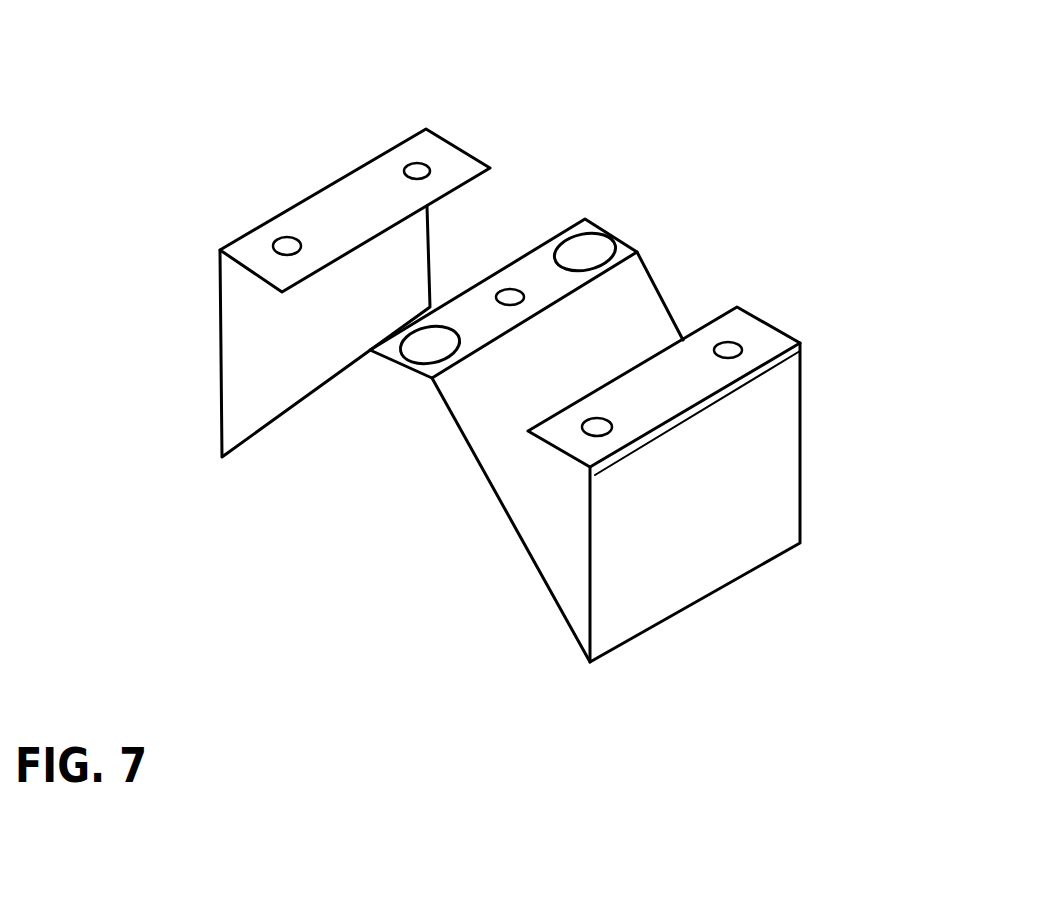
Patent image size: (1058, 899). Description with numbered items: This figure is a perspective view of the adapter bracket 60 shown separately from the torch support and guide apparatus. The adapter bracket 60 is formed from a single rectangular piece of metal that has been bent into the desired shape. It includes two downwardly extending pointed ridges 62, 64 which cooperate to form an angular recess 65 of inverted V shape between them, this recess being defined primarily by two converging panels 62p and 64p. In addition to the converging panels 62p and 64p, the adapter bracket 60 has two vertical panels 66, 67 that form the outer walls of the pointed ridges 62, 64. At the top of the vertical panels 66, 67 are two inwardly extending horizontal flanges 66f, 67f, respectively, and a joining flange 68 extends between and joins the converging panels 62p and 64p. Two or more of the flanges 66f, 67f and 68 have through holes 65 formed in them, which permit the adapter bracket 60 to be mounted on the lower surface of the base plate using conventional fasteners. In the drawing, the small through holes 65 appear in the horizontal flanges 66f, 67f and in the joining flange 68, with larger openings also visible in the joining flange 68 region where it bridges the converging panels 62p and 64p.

The adapter bracket 60 is at (733, 197).
The pointed ridge 62 is at (200, 443).
The converging panel 62p is at (318, 400).
The pointed ridge 64 is at (660, 680).
The converging panel 64p is at (497, 510).
The through holes 65 is at (425, 162).
The vertical panel 66 is at (325, 331).
The horizontal flange 66f is at (343, 213).
The vertical panel 67 is at (695, 502).
The horizontal flange 67f is at (678, 380).
The joining flange 68 is at (534, 276).